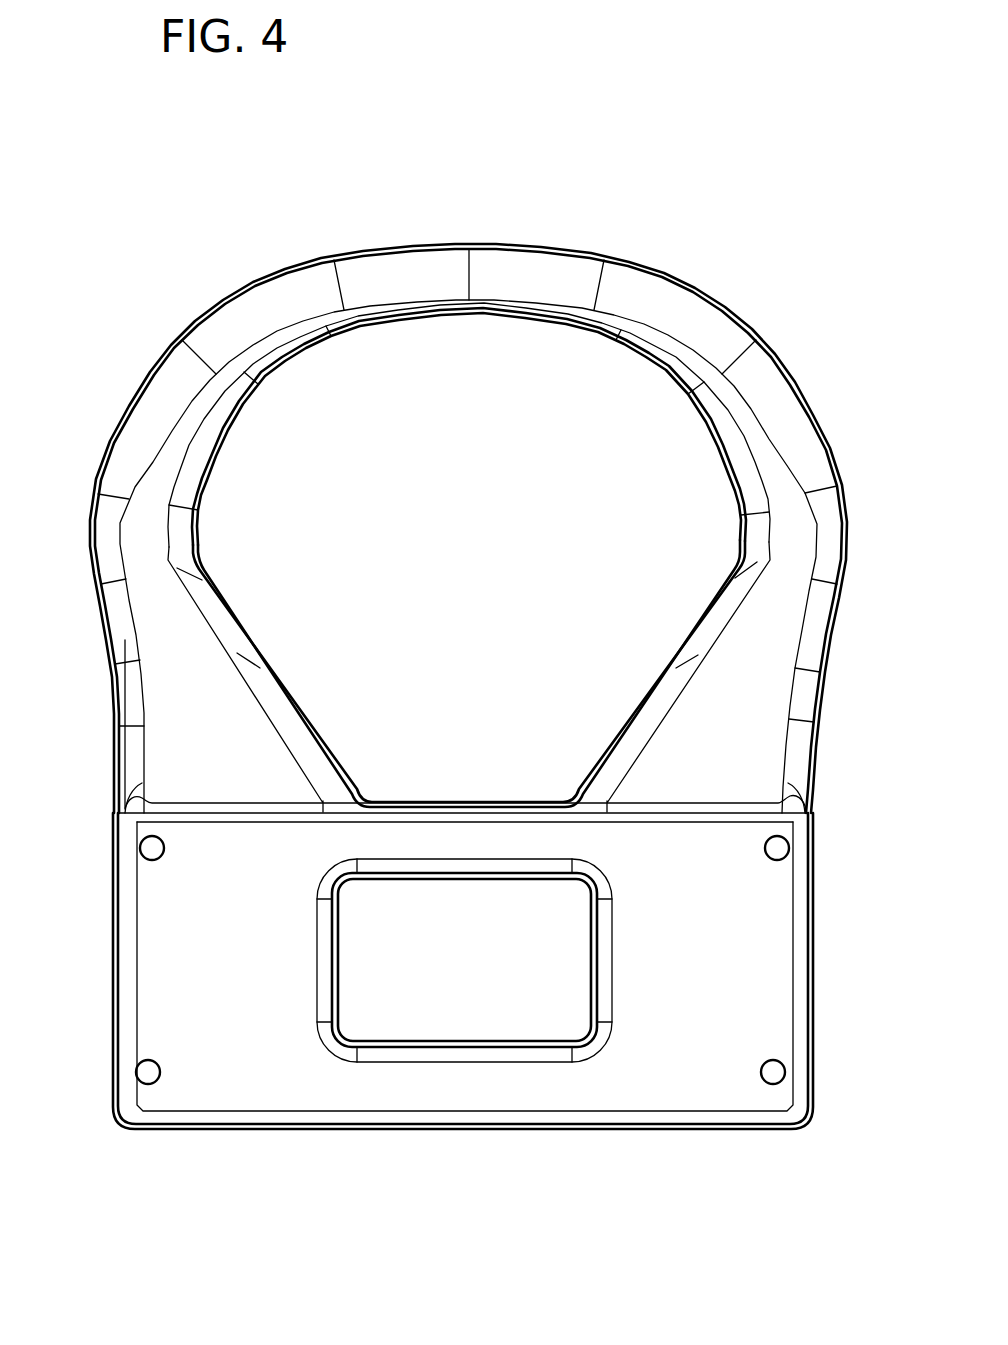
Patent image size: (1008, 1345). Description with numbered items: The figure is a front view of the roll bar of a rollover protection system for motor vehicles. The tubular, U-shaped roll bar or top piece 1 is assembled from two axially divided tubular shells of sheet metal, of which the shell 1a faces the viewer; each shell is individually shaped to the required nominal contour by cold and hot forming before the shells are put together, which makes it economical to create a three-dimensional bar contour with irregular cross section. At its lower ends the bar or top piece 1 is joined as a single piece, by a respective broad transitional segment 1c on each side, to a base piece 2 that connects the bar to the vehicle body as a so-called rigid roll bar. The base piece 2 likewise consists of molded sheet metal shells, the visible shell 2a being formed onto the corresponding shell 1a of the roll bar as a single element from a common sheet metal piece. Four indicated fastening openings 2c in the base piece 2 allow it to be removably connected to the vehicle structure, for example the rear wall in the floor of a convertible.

The roll bar 1 is at (459, 441).
The tubular shell 1a is at (685, 318).
The transitional segment 1c is at (195, 710).
The base piece 2 is at (460, 1066).
The molded shell 2a is at (657, 1070).
The fastening opening 2c is at (150, 849).